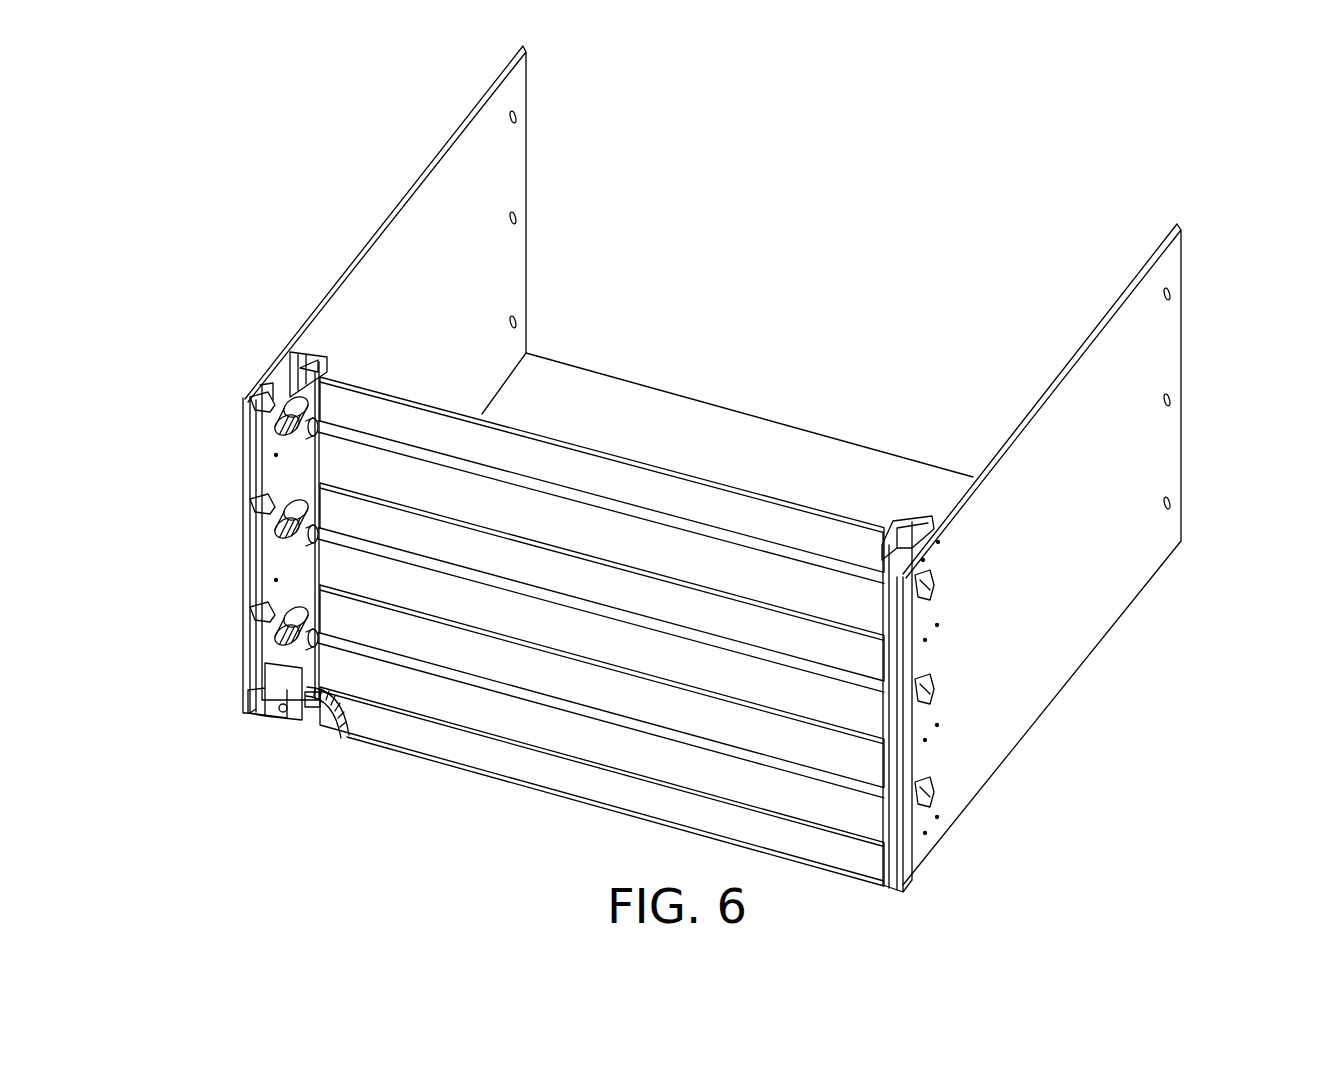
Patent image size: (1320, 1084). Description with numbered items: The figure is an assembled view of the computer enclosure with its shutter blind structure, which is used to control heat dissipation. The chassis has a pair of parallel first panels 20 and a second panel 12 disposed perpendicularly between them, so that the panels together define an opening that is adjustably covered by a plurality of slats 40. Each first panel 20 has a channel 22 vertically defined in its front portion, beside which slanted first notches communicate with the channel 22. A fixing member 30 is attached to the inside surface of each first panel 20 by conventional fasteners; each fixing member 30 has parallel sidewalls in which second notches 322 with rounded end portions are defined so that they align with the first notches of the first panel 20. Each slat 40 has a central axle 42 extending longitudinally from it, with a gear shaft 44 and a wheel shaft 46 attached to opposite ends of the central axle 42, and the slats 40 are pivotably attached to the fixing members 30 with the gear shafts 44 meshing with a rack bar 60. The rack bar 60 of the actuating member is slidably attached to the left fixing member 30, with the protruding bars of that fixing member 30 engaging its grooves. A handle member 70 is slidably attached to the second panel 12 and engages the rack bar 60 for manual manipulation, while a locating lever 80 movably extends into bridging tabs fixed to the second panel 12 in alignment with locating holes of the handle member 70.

The second panel 12 is at (692, 417).
The first panel 20 is at (433, 230).
The channel 22 is at (255, 546).
The fixing member 30 is at (287, 378).
The second notch 322 is at (262, 400).
The slat 40 is at (564, 727).
The central axle 42 is at (510, 678).
The gear shaft 44 is at (289, 380).
The wheel shaft 46 is at (931, 700).
The rack bar 60 is at (294, 388).
The handle member 70 is at (292, 709).
The locating lever 80 is at (327, 709).